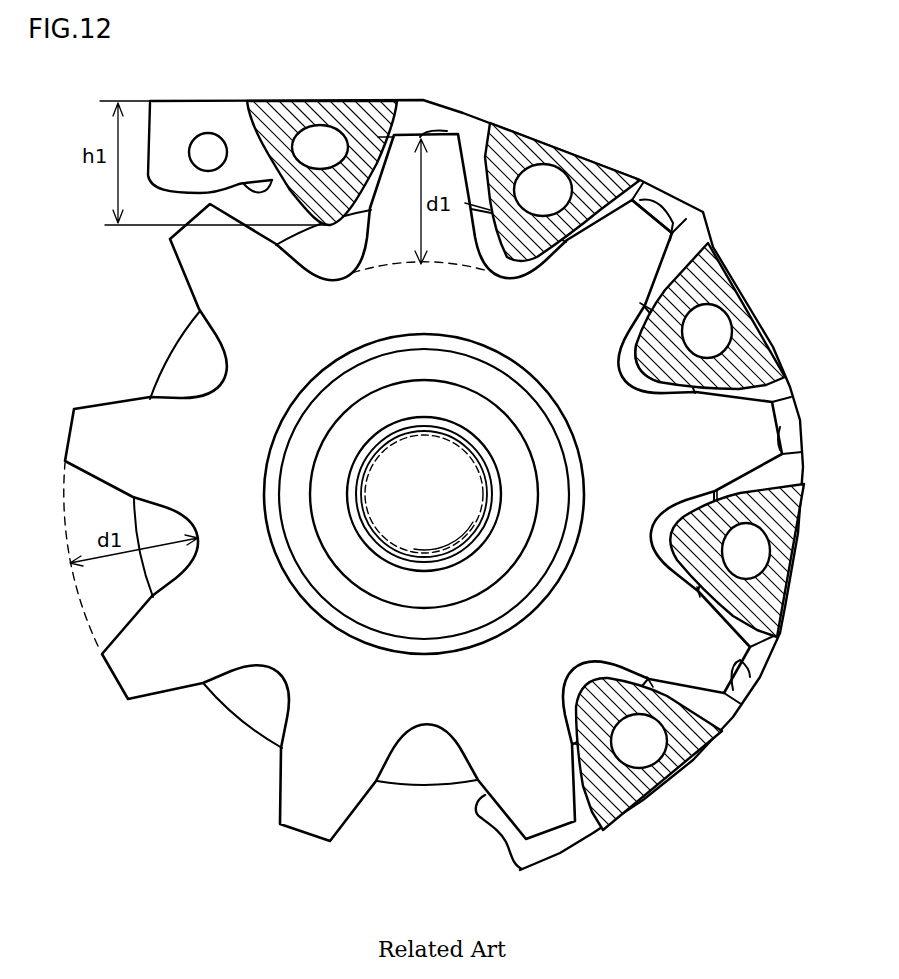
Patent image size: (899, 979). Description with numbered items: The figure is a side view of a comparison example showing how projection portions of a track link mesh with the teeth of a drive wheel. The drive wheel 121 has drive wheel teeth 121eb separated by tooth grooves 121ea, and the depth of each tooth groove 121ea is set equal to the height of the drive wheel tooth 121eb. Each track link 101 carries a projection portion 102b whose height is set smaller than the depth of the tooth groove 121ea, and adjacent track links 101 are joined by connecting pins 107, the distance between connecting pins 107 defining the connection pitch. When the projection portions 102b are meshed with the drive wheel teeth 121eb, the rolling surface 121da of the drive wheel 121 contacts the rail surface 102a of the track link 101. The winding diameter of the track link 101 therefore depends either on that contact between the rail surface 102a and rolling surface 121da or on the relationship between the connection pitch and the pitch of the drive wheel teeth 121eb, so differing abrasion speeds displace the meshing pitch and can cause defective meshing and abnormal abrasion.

The drive wheel 121 is at (283, 410).
The rolling surface 121da is at (173, 343).
The tooth groove 121ea is at (620, 373).
The drive wheel tooth 121eb is at (653, 197).
The track link 101 is at (405, 110).
The rail surface 102a is at (247, 187).
The projection portion 102b is at (317, 210).
The connecting pin 107 is at (207, 150).